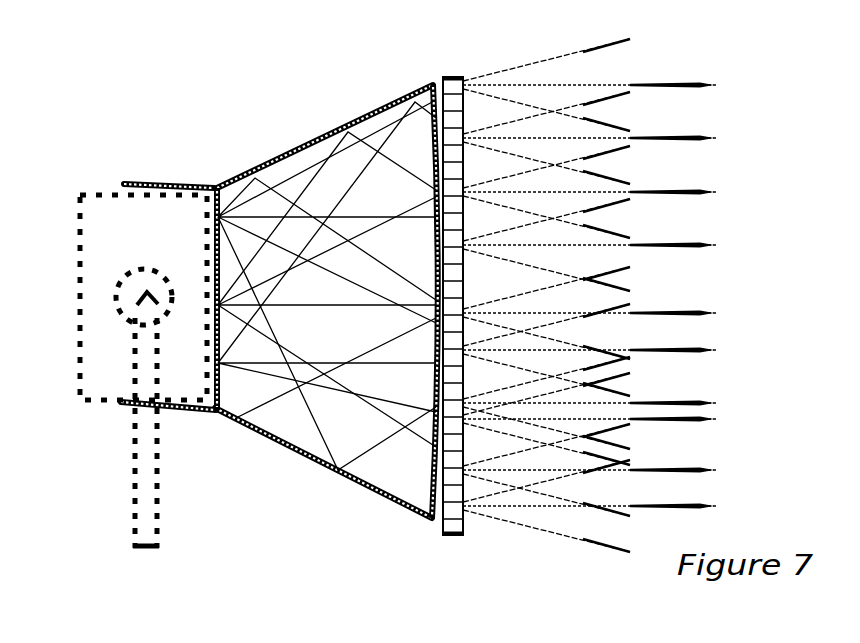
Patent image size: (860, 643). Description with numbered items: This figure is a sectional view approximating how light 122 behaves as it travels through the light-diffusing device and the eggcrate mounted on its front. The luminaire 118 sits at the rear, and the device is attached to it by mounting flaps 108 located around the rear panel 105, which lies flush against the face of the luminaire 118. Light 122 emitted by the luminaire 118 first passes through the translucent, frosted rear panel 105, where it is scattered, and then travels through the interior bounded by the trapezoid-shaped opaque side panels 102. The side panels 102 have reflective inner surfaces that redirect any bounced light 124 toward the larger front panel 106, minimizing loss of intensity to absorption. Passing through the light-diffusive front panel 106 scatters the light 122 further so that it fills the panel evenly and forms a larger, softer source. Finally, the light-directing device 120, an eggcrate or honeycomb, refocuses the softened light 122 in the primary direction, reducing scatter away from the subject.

The opaque side panel 102 is at (292, 447).
The rear panel 105 is at (233, 408).
The front panel 106 is at (425, 492).
The mounting flaps 108 is at (185, 417).
The luminaire 118 is at (76, 160).
The light-directing device 120 is at (455, 76).
The light emitted from luminaire 122 is at (277, 306).
The bounced light 124 is at (358, 453).